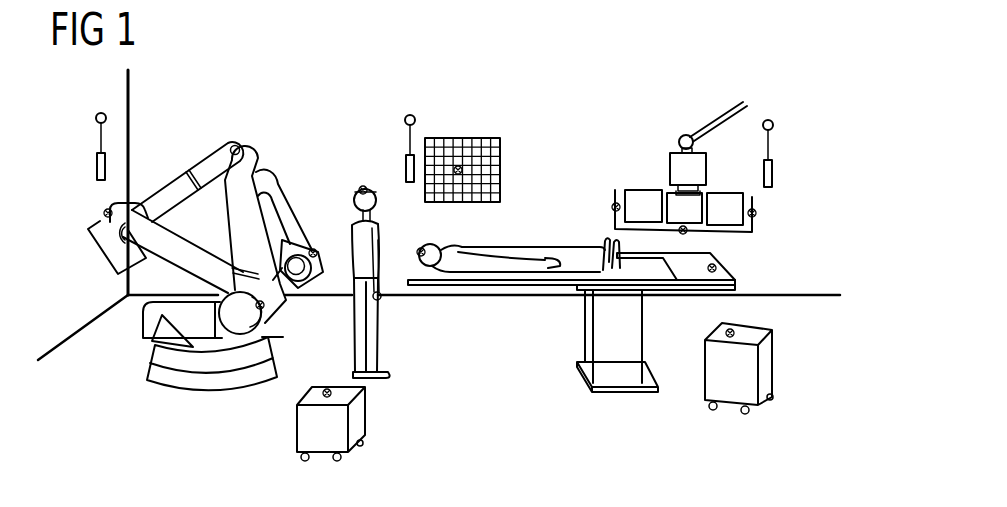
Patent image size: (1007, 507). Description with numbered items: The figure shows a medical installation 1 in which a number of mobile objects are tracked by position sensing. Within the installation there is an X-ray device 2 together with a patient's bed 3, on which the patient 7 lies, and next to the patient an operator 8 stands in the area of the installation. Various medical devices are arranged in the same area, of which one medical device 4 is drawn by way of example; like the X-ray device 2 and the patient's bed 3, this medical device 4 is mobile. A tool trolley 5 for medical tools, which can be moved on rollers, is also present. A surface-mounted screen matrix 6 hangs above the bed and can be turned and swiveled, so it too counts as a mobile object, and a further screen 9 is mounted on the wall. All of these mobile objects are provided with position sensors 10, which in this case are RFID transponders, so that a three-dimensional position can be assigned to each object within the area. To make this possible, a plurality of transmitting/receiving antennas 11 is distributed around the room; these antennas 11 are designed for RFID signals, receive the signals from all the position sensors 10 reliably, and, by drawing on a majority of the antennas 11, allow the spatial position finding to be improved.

The medical installation 1 is at (585, 113).
The X-ray device 2 is at (152, 269).
The patient's bed 3 is at (738, 285).
The medical device 4 is at (296, 420).
The tool trolley 5 is at (770, 372).
The screen matrix 6 is at (722, 178).
The patient 7 is at (514, 254).
The operator 8 is at (350, 212).
The further screen 9 is at (439, 137).
The position sensors 10 is at (105, 211).
The transmitting/receiving antennas 11 is at (96, 142).